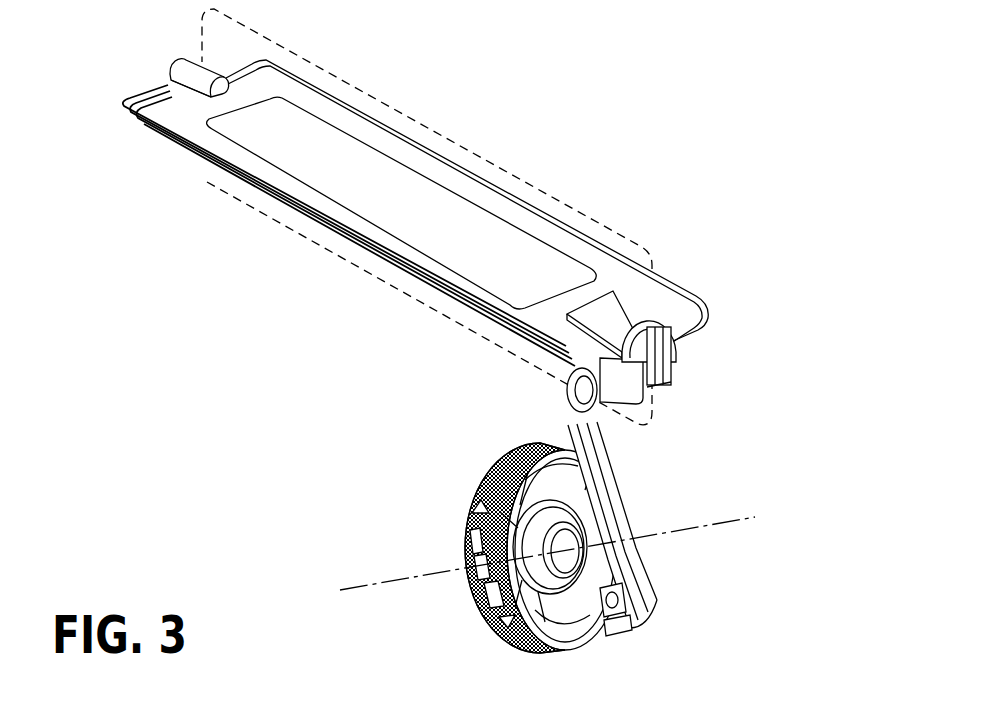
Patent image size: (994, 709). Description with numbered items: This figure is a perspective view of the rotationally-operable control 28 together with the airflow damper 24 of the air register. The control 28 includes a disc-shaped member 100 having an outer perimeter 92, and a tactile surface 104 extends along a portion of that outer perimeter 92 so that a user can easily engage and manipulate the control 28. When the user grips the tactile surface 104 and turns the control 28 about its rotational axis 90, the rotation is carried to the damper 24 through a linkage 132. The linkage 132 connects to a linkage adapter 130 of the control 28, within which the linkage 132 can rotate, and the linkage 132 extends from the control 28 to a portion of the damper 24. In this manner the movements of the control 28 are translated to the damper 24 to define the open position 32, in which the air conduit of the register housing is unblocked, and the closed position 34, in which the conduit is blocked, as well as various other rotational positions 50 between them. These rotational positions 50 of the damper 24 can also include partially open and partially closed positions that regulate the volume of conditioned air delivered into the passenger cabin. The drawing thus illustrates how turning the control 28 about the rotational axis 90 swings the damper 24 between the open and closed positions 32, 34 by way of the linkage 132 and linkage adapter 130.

The airflow damper 24 is at (577, 250).
The open position 32 is at (131, 92).
The closed position 34 is at (354, 80).
The rotational positions 50 is at (397, 193).
The disc-shaped member 100 is at (491, 437).
The tactile surface 104 is at (473, 588).
The rotationally-operable control 28 is at (483, 630).
The outer perimeter 92 is at (527, 657).
The rotational axis 90 is at (693, 523).
The linkage 132 is at (600, 457).
The linkage adapter 130 is at (620, 630).